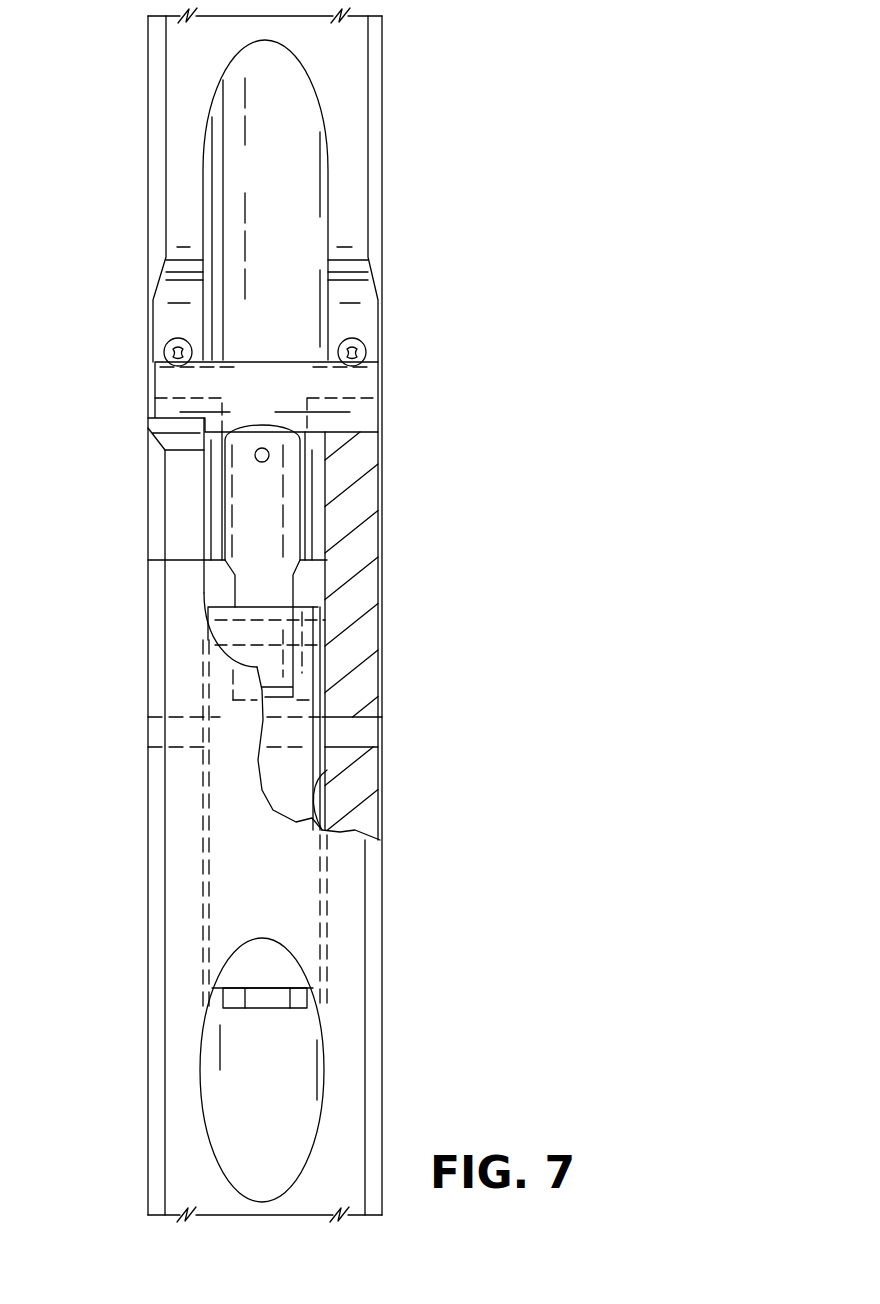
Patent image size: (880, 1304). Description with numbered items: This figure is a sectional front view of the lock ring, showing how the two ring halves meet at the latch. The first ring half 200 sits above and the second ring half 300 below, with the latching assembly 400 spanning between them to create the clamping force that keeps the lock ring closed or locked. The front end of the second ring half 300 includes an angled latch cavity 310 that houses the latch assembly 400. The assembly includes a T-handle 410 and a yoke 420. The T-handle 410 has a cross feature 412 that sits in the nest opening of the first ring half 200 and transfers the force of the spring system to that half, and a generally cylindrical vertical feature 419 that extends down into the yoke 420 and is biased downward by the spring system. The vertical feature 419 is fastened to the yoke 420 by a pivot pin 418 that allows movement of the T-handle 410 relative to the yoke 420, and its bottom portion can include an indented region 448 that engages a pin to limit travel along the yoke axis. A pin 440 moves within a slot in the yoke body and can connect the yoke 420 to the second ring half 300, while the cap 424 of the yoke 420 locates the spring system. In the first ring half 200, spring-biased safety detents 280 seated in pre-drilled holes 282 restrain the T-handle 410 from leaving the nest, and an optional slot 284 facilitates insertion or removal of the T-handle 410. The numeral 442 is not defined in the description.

The first ring half 200 is at (383, 90).
The slot 284 is at (300, 190).
The pre-drilled holes 282 is at (172, 343).
The safety detents 280 is at (163, 352).
The cross feature 412 is at (362, 388).
The vertical feature 419 is at (237, 497).
The T-handle 410 is at (307, 492).
The latching assembly 400 is at (318, 537).
The indented region 448 is at (293, 591).
The pivot pin 418 is at (322, 633).
The yoke 420 is at (322, 677).
The pin 440 is at (372, 731).
The port 442 is at (325, 766).
The latch cavity 310 is at (315, 797).
The cap 424 is at (302, 998).
The second ring half 300 is at (382, 1133).